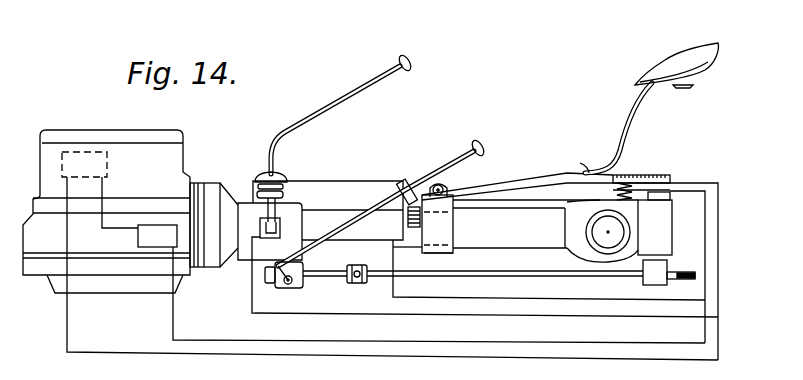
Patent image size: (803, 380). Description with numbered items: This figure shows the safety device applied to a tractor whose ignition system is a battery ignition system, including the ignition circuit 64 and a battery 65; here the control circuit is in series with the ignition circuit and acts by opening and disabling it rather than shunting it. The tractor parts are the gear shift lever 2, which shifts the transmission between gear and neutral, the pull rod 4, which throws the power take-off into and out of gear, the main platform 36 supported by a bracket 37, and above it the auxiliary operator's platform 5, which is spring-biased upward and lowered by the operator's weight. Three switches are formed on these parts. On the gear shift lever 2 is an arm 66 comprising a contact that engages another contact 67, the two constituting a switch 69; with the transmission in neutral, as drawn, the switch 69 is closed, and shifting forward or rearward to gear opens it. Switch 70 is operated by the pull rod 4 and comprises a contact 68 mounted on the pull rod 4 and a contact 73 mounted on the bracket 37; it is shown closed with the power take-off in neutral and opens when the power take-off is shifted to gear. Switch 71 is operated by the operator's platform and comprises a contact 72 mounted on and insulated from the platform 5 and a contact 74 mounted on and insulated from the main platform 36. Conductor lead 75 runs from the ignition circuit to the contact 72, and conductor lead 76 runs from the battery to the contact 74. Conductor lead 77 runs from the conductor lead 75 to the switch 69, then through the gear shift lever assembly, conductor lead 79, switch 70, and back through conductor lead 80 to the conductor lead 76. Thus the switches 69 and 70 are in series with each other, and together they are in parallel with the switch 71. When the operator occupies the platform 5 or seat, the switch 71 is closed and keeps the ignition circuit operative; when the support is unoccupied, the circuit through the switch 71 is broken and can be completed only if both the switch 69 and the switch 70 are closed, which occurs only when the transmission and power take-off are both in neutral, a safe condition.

The gear shift lever 2 is at (341, 101).
The pull rod 4 is at (455, 163).
The auxiliary platform 5 is at (532, 178).
The main platform 36 is at (500, 200).
The bracket 37 is at (449, 253).
The ignition circuit 64 is at (62, 152).
The battery 65 is at (138, 242).
The arm 66 is at (284, 191).
The contact 67 is at (281, 231).
The contact 68 is at (412, 183).
The switch 69 is at (250, 220).
The switch 70 is at (403, 208).
The switch 71 is at (677, 185).
The contact 72 is at (665, 175).
The contact 73 is at (438, 224).
The contact 74 is at (670, 203).
The conductor lead 75 is at (236, 358).
The conductor lead 76 is at (334, 336).
The conductor lead 77 is at (552, 320).
The conductor lead 79 is at (358, 169).
The conductor lead 80 is at (473, 284).